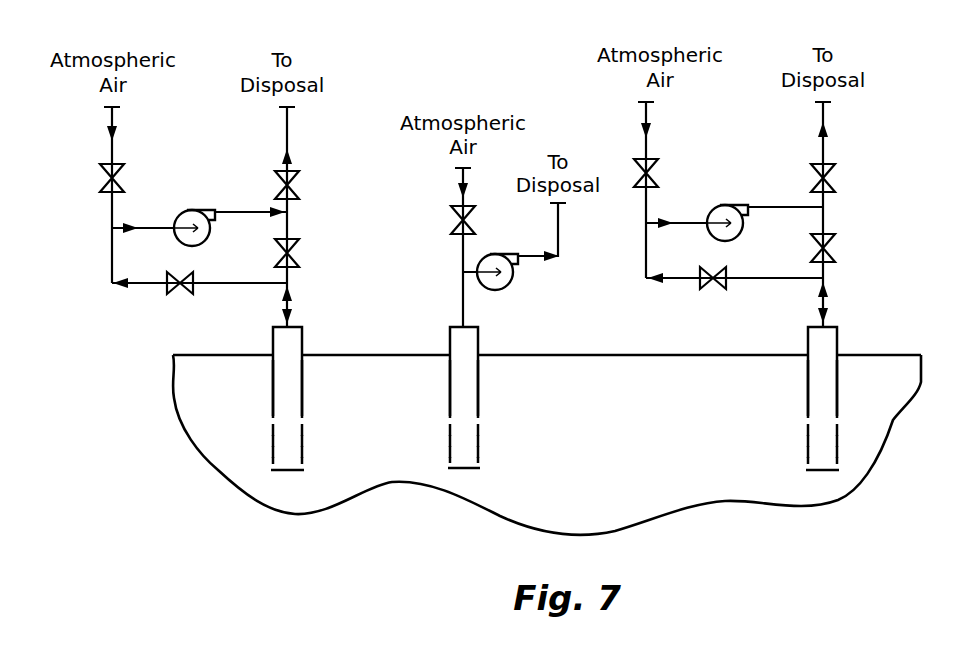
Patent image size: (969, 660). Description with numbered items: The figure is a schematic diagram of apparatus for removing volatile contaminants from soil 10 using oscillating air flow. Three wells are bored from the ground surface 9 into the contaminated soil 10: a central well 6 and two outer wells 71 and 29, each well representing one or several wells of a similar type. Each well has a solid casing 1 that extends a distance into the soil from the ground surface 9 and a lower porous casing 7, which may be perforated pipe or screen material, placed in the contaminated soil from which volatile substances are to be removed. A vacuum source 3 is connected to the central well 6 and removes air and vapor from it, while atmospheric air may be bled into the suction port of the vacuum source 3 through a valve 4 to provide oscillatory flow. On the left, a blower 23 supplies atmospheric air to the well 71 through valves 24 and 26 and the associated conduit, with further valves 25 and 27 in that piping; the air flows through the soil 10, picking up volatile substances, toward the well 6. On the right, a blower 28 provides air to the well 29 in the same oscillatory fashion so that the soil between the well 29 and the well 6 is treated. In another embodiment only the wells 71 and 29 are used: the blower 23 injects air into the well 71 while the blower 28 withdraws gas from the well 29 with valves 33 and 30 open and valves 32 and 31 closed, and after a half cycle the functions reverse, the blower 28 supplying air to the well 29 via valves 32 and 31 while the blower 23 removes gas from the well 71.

The solid casing 1 is at (808, 388).
The vacuum source 3 is at (507, 285).
The valve 4 is at (450, 220).
The well 6 is at (480, 337).
The porous casing 7 is at (851, 430).
The ground surface 9 is at (568, 352).
The soil 10 is at (583, 448).
The blower 23 is at (198, 212).
The valve 24 is at (124, 180).
The valve 25 is at (300, 188).
The valve 26 is at (300, 258).
The valve 27 is at (188, 274).
The blower 28 is at (730, 207).
The well 29 is at (840, 335).
The valve 30 is at (836, 183).
The valve 31 is at (836, 253).
The valve 32 is at (658, 175).
The valve 33 is at (722, 268).
The well 71 is at (304, 335).